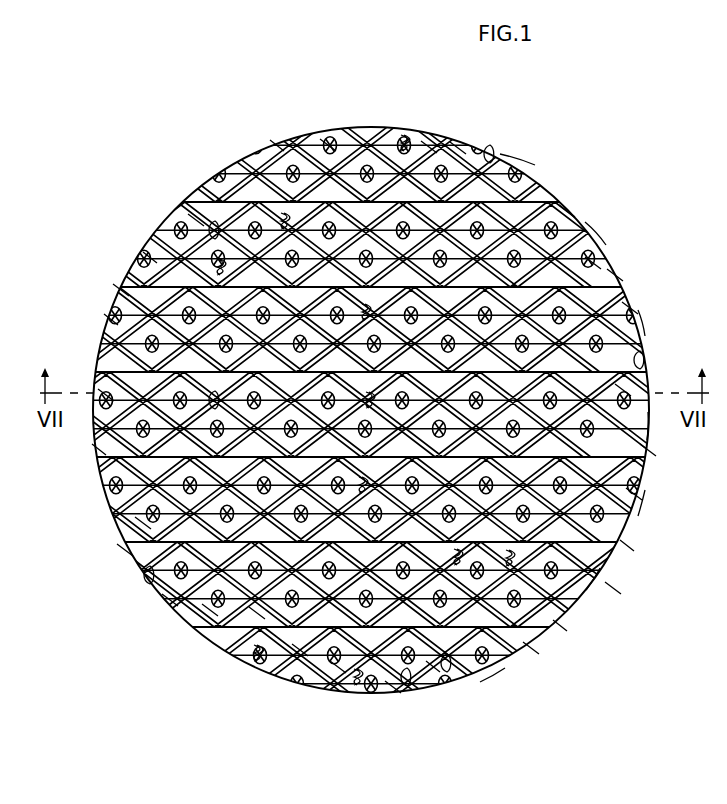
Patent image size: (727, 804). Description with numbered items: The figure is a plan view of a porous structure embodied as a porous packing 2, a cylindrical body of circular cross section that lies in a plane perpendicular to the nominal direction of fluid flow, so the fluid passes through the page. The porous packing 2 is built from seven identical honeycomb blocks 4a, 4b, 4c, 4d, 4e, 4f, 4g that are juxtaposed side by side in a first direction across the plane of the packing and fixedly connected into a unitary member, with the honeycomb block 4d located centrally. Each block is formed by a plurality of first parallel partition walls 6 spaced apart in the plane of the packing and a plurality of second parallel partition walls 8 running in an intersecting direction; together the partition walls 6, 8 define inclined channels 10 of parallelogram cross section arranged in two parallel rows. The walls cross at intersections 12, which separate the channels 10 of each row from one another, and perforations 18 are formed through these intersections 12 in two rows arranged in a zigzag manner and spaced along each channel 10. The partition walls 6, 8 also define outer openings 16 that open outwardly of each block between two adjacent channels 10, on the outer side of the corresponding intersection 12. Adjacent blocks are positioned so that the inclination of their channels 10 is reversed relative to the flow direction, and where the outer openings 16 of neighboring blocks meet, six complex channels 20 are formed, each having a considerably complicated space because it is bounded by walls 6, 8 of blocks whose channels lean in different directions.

The porous packing 2 is at (162, 173).
The honeycomb block 4a is at (517, 163).
The honeycomb block 4b is at (595, 236).
The honeycomb block 4c is at (640, 324).
The honeycomb block 4d is at (657, 425).
The honeycomb block 4e is at (643, 503).
The honeycomb block 4f is at (600, 583).
The honeycomb block 4g is at (493, 673).
The first parallel partition walls 6 is at (277, 147).
The second parallel partition walls 8 is at (328, 145).
The inclined channels 10 is at (429, 147).
The intersections 12 is at (490, 154).
The outer openings 16 is at (257, 613).
The perforations 18 is at (407, 143).
The complex channels 20 is at (368, 215).